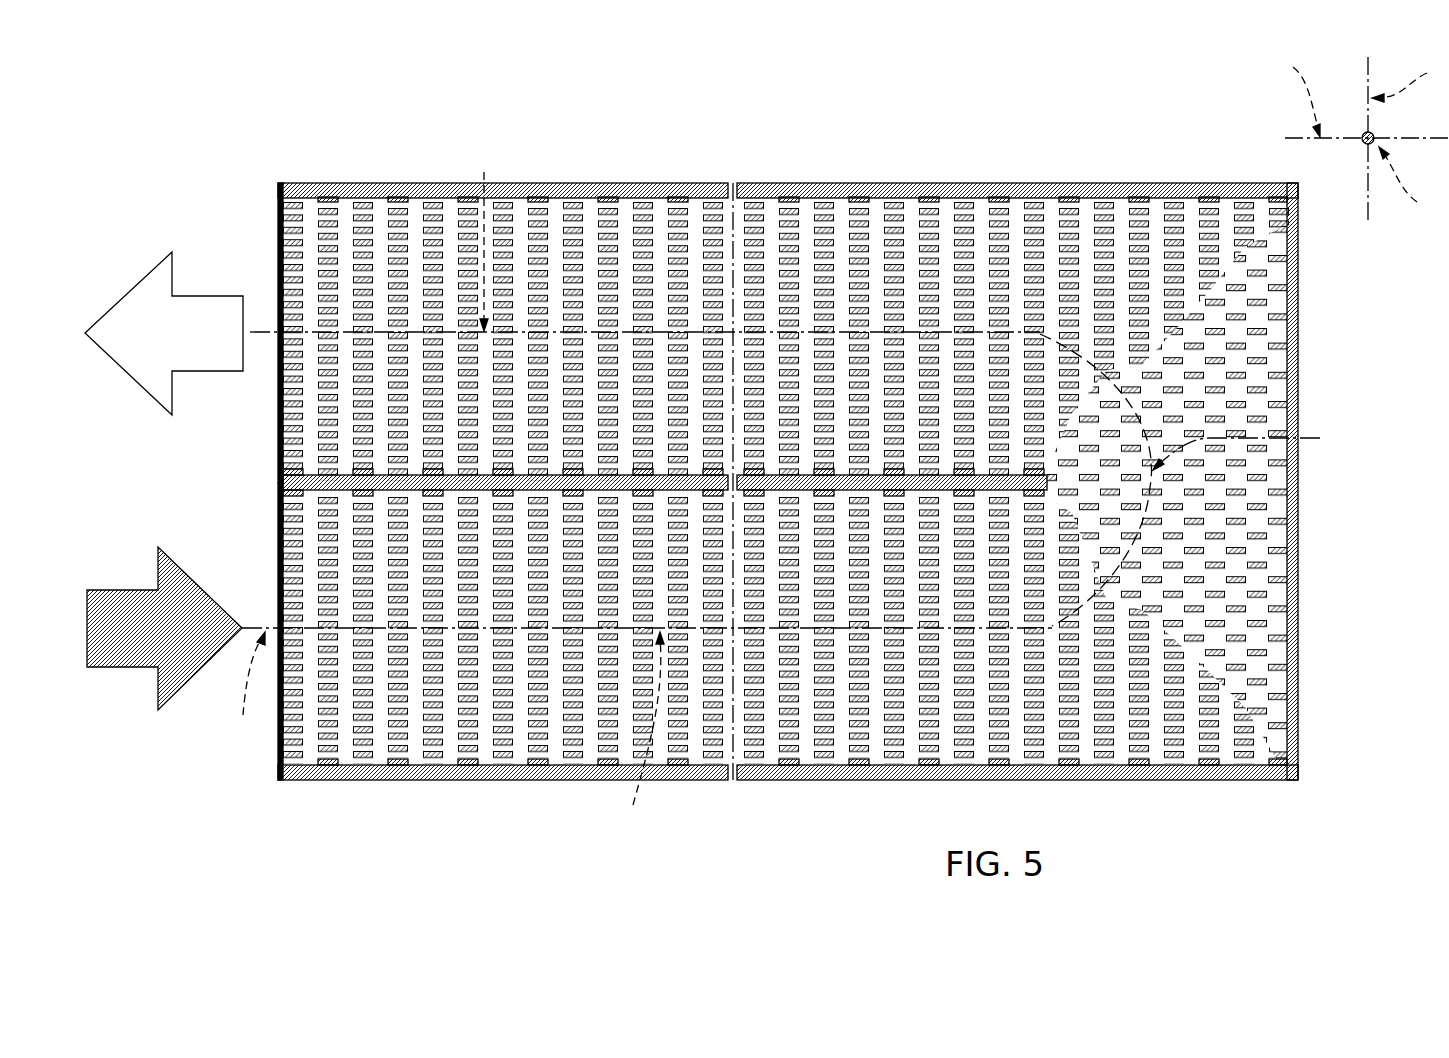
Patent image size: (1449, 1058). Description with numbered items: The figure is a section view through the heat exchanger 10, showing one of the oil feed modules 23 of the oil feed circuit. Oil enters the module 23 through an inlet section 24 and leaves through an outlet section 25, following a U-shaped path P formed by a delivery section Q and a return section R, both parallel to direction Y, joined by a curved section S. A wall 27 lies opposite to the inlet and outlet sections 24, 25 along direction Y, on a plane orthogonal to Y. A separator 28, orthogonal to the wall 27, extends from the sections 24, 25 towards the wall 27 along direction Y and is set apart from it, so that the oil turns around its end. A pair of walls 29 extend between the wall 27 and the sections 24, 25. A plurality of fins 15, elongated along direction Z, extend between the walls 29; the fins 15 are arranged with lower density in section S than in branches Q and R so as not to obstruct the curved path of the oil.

The heat exchanger 10 is at (1314, 798).
The fins 15 is at (765, 232).
The oil feed module 23 is at (1083, 163).
The inlet section 24 is at (280, 206).
The outlet section 25 is at (278, 760).
The wall 27 is at (1290, 692).
The separator 28 is at (278, 481).
The walls 29 is at (676, 195).